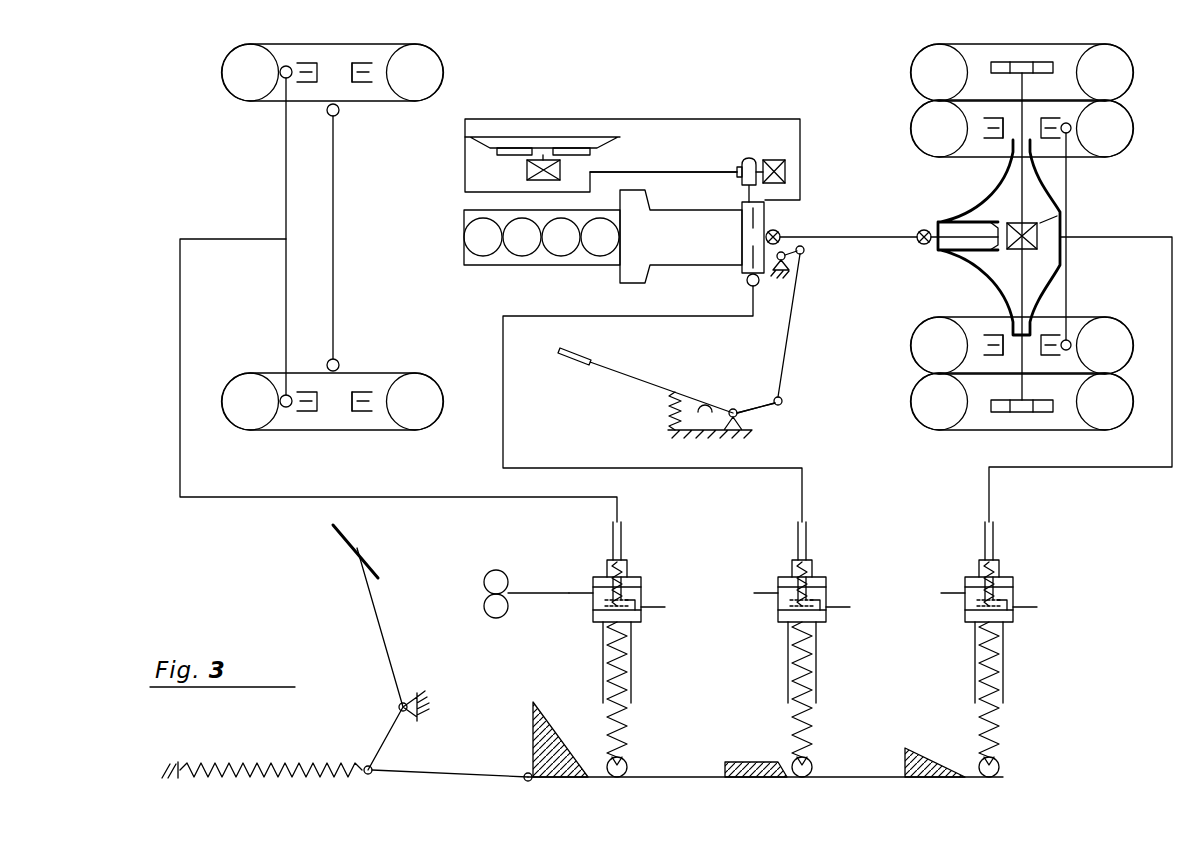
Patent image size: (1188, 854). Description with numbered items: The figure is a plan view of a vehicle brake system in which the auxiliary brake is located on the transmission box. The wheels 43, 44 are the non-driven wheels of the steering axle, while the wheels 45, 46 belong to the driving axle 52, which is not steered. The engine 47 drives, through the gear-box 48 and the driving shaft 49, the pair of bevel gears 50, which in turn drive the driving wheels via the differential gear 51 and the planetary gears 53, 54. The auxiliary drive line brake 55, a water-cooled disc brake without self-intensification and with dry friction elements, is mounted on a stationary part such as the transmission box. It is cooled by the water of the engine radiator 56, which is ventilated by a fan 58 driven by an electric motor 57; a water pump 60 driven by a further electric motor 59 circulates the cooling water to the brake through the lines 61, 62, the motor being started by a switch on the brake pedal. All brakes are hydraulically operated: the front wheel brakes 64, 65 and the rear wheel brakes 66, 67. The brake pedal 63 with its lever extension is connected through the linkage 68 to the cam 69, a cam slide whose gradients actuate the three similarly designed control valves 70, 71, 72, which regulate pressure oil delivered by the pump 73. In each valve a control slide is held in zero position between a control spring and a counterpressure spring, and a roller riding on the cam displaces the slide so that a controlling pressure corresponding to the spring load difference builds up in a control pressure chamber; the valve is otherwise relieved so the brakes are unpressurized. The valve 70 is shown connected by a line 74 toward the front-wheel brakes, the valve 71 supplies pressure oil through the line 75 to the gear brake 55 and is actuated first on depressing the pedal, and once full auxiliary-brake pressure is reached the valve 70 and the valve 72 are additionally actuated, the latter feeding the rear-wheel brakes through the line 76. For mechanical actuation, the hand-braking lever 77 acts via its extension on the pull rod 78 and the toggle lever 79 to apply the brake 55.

The wheel 43 is at (222, 86).
The wheel 44 is at (240, 373).
The wheel 45 is at (918, 93).
The wheel 46 is at (907, 395).
The engine 47 is at (505, 258).
The gear-box 48 is at (665, 253).
The driving shaft 49 is at (880, 236).
The pair of bevel gears 50 is at (958, 225).
The differential gear 51 is at (1038, 236).
The driving axle 52 is at (950, 252).
The planetary gear 53 is at (993, 68).
The planetary gear 54 is at (1000, 412).
The auxiliary drive line brake 55 is at (765, 212).
The engine radiator 56 is at (530, 125).
The electric motor 57 is at (548, 168).
The fan 58 is at (563, 148).
The electric motor 59 is at (774, 160).
The water pump 60 is at (738, 172).
The line 61 is at (652, 171).
The line 62 is at (645, 117).
The brake pedal 63 is at (345, 535).
The wheel brake 64 is at (358, 83).
The wheel brake 65 is at (360, 392).
The wheel brake 66 is at (993, 138).
The wheel brake 67 is at (993, 318).
The linkage 68 is at (455, 775).
The cam 69 is at (682, 777).
The control valve 70 is at (589, 629).
The control valve 71 is at (774, 629).
The control valve 72 is at (961, 629).
The pump 73 is at (484, 594).
The line 74 is at (335, 497).
The line 75 is at (504, 382).
The line 76 is at (1115, 467).
The hand-braking lever 77 is at (622, 376).
The pull rod 78 is at (792, 333).
The toggle lever 79 is at (787, 244).